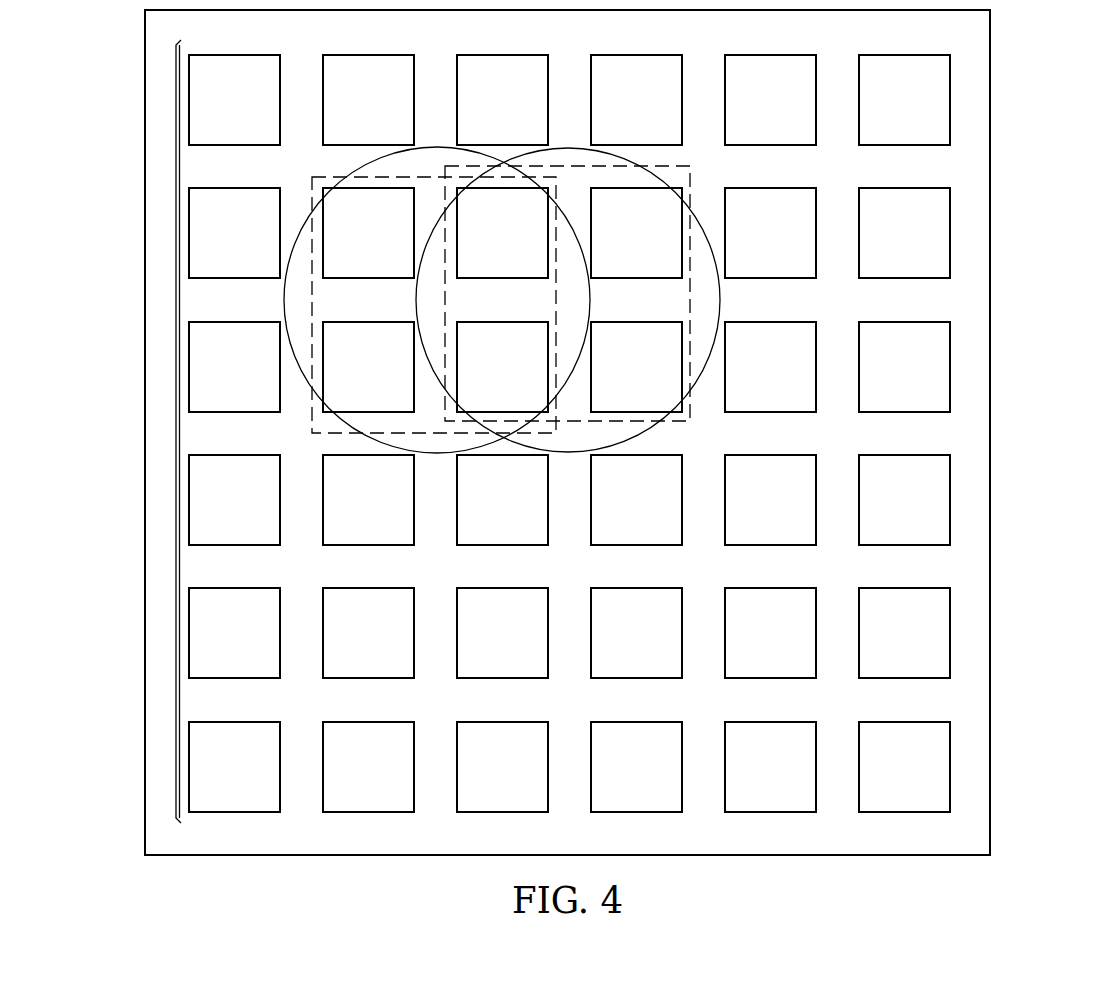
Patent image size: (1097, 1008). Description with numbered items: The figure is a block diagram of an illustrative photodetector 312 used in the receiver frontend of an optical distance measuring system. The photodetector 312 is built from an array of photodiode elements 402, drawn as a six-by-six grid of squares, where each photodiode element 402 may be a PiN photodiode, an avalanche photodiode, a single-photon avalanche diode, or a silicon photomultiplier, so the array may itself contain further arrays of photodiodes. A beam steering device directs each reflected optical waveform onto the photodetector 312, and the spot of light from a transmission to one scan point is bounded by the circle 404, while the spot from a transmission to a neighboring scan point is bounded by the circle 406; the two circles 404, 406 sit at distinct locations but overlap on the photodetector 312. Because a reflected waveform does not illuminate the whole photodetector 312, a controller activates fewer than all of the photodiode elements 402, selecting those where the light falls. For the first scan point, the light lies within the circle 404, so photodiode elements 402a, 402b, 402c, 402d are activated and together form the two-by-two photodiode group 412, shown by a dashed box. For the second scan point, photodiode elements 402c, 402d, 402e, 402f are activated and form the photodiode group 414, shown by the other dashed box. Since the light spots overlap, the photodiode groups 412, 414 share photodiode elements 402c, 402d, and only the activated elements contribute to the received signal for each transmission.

The photodetector 312 is at (992, 167).
The photodiode elements 402 is at (175, 432).
The photodiode element 402a is at (397, 246).
The photodiode element 402b is at (397, 380).
The photodiode element 402c is at (531, 246).
The photodiode element 402d is at (531, 380).
The photodiode element 402e is at (665, 246).
The photodiode element 402f is at (665, 380).
The circle 404 is at (283, 308).
The circle 406 is at (415, 308).
The photodiode group 412 is at (558, 290).
The photodiode group 414 is at (690, 310).